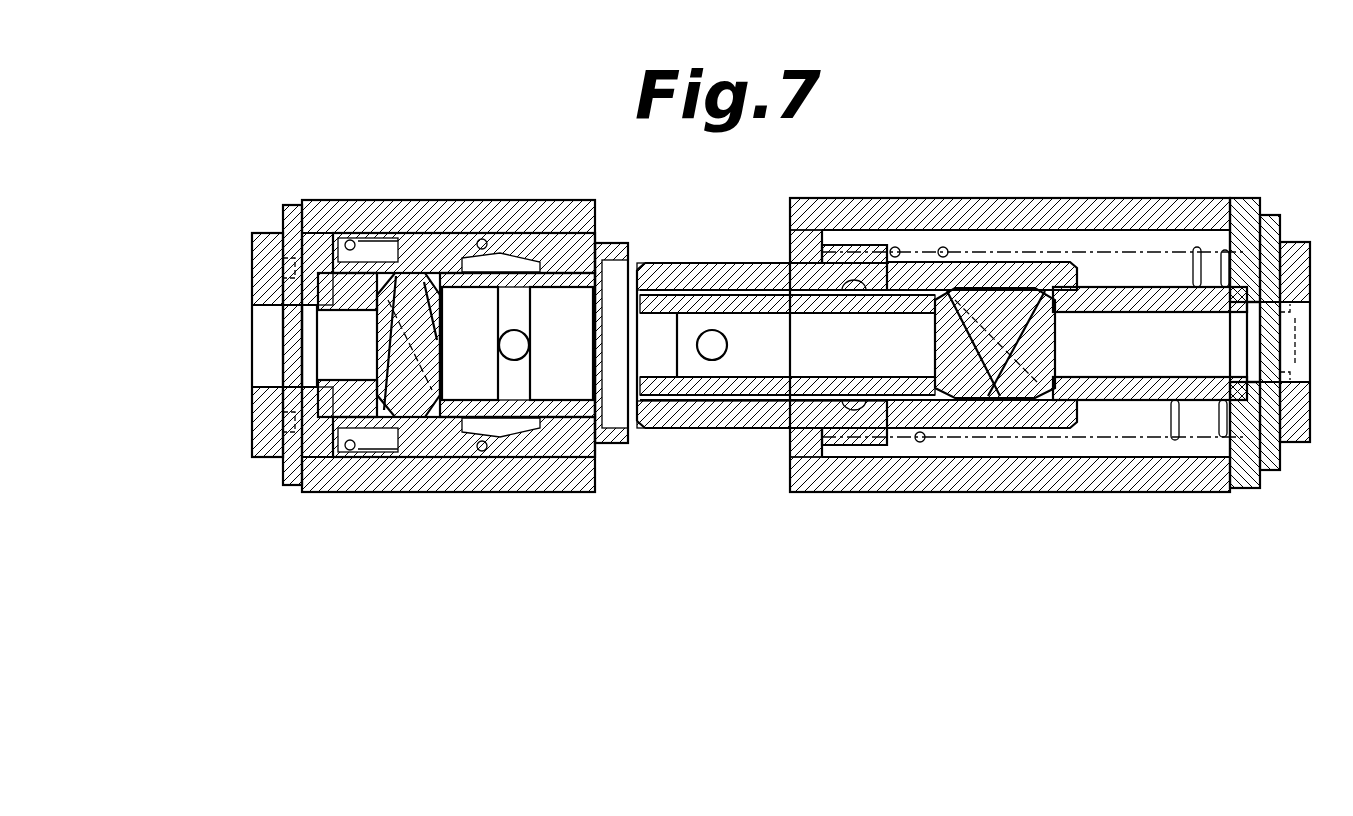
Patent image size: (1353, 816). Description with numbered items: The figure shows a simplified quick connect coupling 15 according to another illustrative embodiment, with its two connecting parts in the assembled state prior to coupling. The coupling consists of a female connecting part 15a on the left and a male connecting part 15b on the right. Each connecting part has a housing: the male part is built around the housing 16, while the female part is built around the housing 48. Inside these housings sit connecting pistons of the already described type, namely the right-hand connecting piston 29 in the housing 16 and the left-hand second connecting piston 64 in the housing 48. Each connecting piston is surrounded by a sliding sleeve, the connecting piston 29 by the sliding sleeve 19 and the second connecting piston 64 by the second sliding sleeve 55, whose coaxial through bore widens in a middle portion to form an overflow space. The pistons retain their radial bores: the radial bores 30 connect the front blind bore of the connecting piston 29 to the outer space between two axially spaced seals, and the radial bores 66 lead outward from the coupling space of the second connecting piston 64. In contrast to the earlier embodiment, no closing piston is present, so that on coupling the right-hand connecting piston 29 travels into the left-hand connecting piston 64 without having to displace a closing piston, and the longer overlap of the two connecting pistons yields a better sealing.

The quick connect coupling 15 is at (215, 225).
The connecting part (female) 15a is at (437, 177).
The connecting part (male) 15b is at (1182, 180).
The housing 16 is at (921, 213).
The sliding sleeve 19 is at (1008, 263).
The connecting piston 29 is at (975, 363).
The radial bores 30 is at (712, 345).
The housing 48 is at (488, 215).
The second sliding sleeve 55 is at (407, 255).
The second connecting piston 64 is at (350, 402).
The radial bores 66 is at (513, 345).